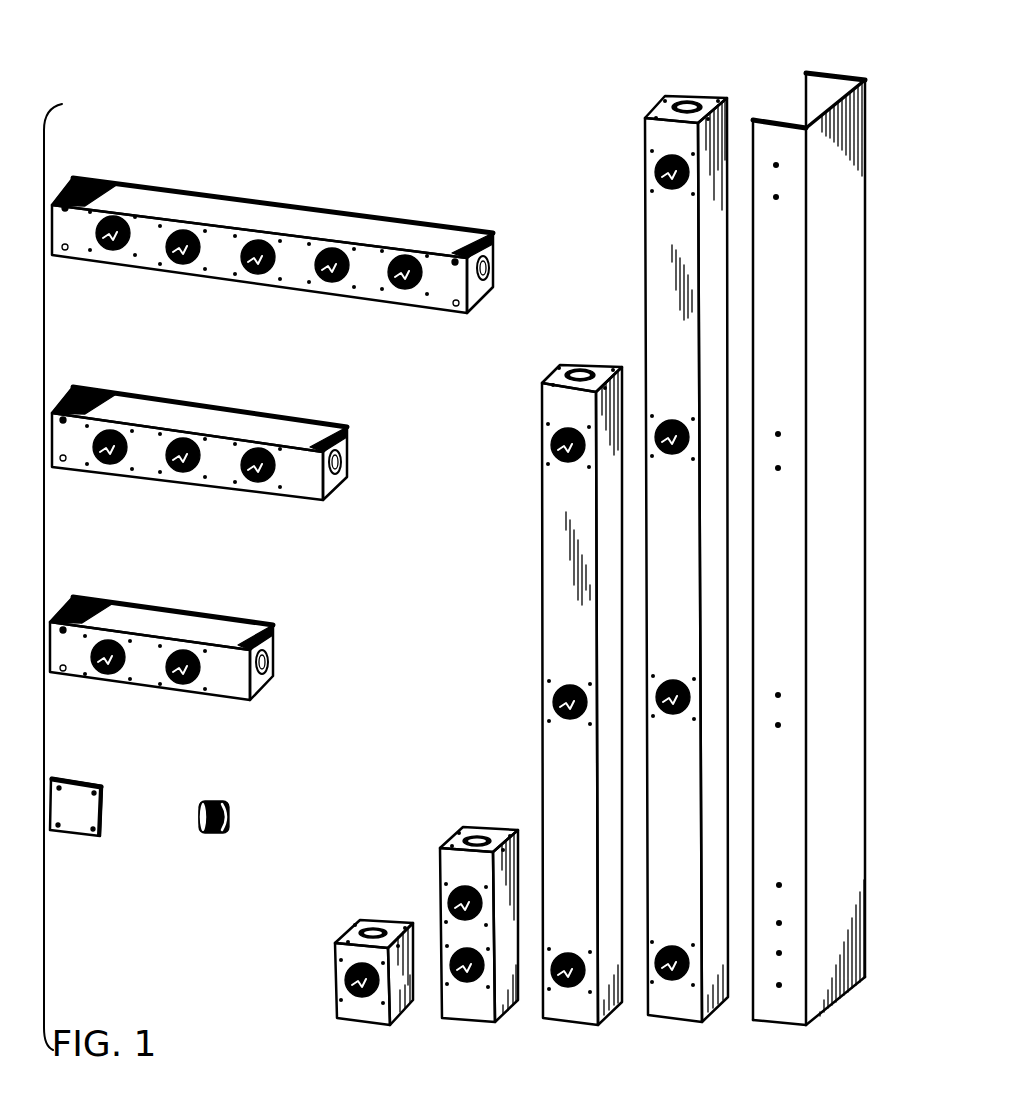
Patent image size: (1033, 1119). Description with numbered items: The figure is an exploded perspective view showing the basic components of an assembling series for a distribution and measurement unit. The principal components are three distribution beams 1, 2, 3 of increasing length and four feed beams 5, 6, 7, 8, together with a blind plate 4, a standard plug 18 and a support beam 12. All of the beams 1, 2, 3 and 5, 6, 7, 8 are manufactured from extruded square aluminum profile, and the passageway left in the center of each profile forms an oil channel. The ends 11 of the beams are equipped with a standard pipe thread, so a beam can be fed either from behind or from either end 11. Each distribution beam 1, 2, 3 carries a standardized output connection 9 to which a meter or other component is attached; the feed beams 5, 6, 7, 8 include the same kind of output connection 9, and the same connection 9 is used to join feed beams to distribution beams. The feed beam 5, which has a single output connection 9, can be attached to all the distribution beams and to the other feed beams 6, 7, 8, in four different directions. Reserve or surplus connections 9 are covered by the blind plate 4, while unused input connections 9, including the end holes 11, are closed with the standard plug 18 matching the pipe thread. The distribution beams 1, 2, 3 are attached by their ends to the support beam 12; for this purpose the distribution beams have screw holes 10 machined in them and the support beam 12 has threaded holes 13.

The distribution beam 1 is at (183, 628).
The distribution beam 2 is at (245, 427).
The distribution beam 3 is at (308, 224).
The blind plate 4 is at (82, 810).
The feed beam 5 is at (340, 955).
The feed beam 6 is at (455, 868).
The feed beam 7 is at (558, 572).
The feed beam 8 is at (663, 285).
The output connection 9 is at (127, 250).
The screw holes 10 is at (67, 245).
The ends 11 is at (488, 266).
The support beam 12 is at (832, 142).
The threaded holes 13 is at (778, 166).
The standard plug 18 is at (226, 815).